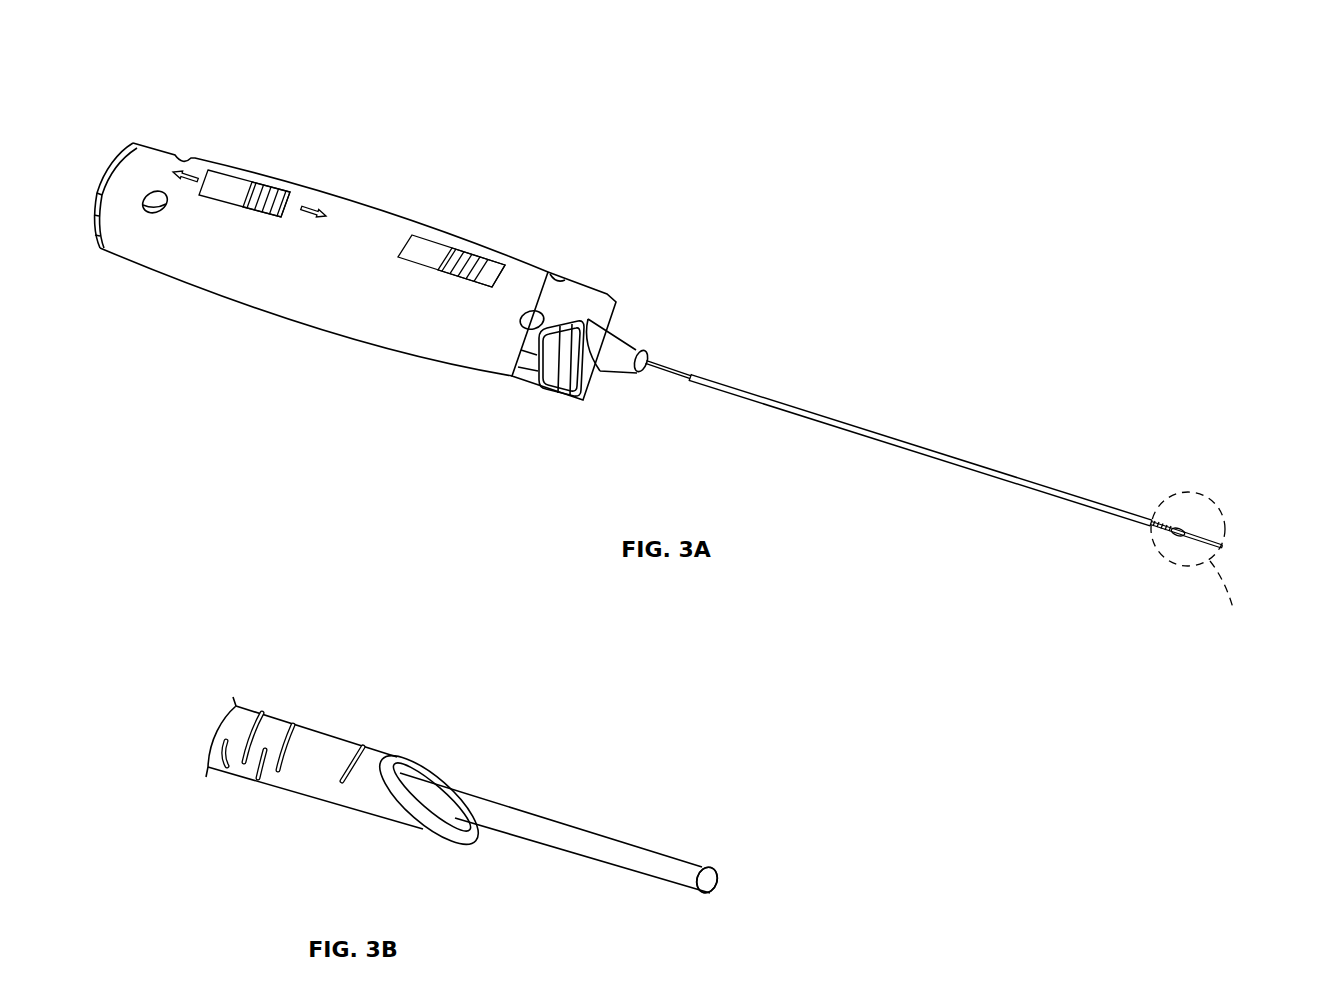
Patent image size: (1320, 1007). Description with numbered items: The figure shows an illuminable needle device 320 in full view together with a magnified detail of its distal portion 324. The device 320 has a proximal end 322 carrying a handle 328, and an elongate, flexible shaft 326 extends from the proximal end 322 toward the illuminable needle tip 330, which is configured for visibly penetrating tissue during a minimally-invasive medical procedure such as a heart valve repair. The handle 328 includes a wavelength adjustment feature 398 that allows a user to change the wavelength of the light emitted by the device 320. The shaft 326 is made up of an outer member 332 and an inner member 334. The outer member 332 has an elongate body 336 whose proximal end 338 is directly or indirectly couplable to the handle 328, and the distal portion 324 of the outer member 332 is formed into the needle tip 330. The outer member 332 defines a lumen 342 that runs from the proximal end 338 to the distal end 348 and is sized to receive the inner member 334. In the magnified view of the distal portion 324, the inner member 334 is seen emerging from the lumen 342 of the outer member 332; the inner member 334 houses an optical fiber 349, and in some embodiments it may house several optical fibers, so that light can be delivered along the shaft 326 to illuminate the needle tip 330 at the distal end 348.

In FIG. 3A, the illuminable needle device 320 is at (606, 76).
In FIG. 3A, the proximal end 322 is at (328, 333).
In FIG. 3A, the handle 328 is at (352, 230).
In FIG. 3A, the wavelength adjustment feature 398 is at (282, 200).
In FIG. 3A, the proximal end of the elongate body 338 is at (728, 386).
In FIG. 3A, the outer member 332 is at (853, 421).
In FIG. 3B, the outer member 332 is at (244, 696).
In FIG. 3A, the elongate body 336 is at (913, 445).
In FIG. 3A, the shaft 326 is at (876, 440).
In FIG. 3A, the distal end 324 is at (1185, 566).
In FIG. 3A, the needle tip 330 is at (1223, 546).
In FIG. 3B, the lumen 342 is at (427, 771).
In FIG. 3B, the inner member 334 is at (546, 815).
In FIG. 3B, the optical fiber 349 is at (585, 838).
In FIG. 3B, the distal end 348 is at (716, 887).